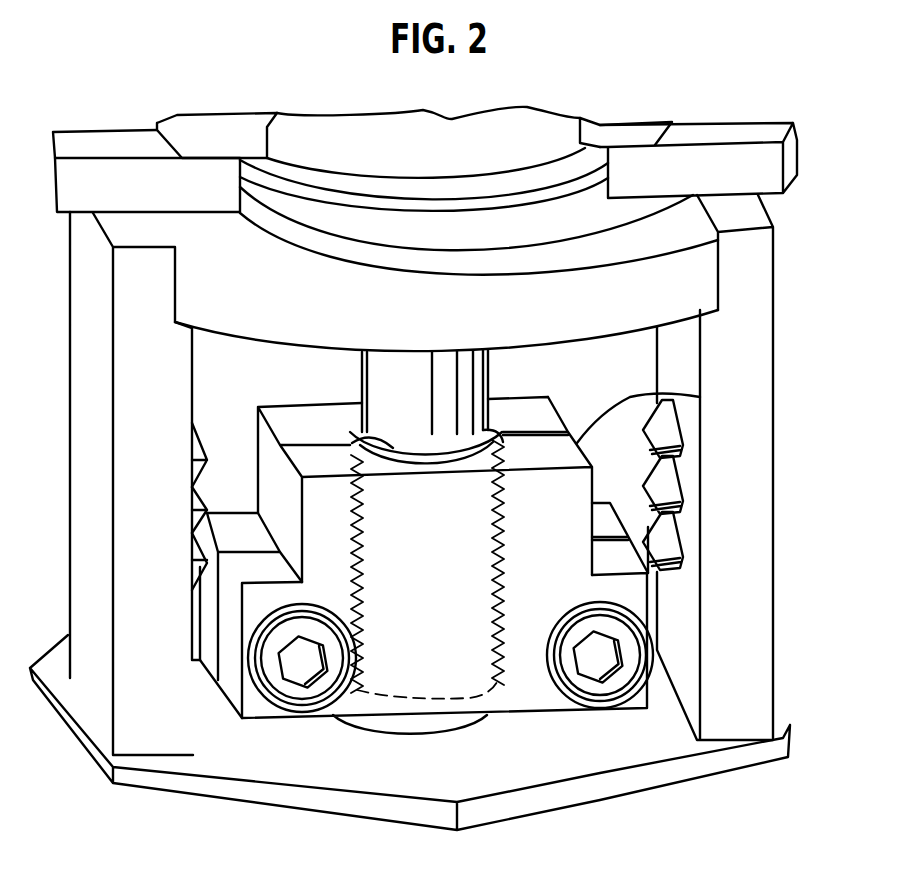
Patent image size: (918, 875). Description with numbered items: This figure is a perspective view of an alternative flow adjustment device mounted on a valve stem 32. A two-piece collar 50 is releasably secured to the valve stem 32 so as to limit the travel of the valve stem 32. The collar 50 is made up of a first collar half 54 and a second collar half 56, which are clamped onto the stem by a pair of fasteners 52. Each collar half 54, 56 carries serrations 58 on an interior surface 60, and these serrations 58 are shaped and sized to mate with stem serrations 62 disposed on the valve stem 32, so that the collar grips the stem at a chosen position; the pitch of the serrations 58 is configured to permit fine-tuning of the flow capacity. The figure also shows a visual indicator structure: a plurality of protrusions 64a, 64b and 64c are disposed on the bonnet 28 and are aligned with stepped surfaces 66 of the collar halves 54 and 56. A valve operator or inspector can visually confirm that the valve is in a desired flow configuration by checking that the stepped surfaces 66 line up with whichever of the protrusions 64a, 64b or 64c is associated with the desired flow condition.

The bonnet 28 is at (778, 312).
The valve stem 32 is at (490, 368).
The two-piece collar 50 is at (700, 397).
The fasteners 52 is at (290, 692).
The first collar half 54 is at (655, 610).
The second collar half 56 is at (262, 438).
The serrations 58 is at (505, 507).
The interior surface 60 is at (357, 427).
The stem serrations 62 is at (505, 582).
The protrusion 64a is at (194, 473).
The protrusion 64b is at (192, 497).
The protrusion 64c is at (192, 553).
The stepped surfaces 66 is at (262, 572).